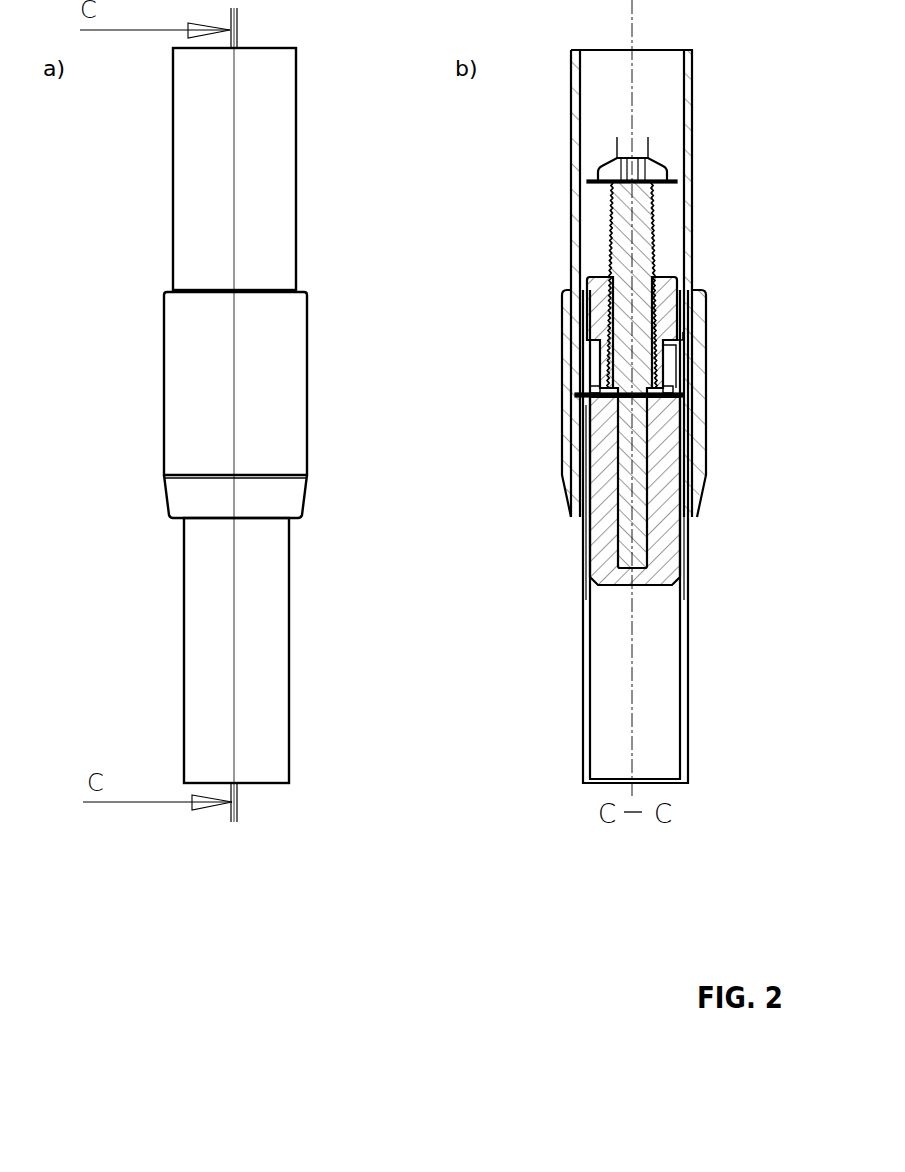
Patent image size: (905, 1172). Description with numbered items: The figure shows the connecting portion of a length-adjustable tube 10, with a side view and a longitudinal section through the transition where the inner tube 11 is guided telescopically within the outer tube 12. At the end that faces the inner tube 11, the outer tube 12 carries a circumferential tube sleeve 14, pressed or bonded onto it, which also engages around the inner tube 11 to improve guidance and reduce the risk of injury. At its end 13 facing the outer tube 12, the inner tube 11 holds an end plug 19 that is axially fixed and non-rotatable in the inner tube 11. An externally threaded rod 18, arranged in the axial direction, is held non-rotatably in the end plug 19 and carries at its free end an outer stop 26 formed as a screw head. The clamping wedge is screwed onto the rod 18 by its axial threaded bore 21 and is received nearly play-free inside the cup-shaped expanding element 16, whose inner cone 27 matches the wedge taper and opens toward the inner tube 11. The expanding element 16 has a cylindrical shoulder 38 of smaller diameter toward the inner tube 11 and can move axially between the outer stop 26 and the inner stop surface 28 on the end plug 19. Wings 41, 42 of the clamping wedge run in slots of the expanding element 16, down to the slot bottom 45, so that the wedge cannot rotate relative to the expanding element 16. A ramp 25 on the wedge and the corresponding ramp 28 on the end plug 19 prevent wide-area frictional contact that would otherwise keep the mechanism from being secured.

The length-adjustable tube 10 is at (141, 601).
The inner tube 11 is at (258, 634).
The outer tube 12 is at (268, 160).
The end of the inner tube facing the outer tube 13 is at (684, 420).
The tube sleeve 14 is at (268, 376).
The expanding element 16 is at (673, 193).
The externally threaded rod 18 is at (641, 200).
The end plug 19 is at (673, 538).
The axial threaded bore of clamping wedge 21 is at (648, 318).
The ramp on the bottom stop surface of the clamping wedge 25 is at (580, 394).
The outer stop 26 is at (651, 171).
The inner cone of the expanding sleeve 27 is at (623, 242).
The ramp on the collar of the end plug 28 is at (690, 393).
The cylindrical shoulder of the expanding sleeve 38 is at (676, 352).
The wing 41 is at (688, 281).
The wing in continuous slot 42 is at (603, 290).
The bottom of slot 45 is at (683, 335).